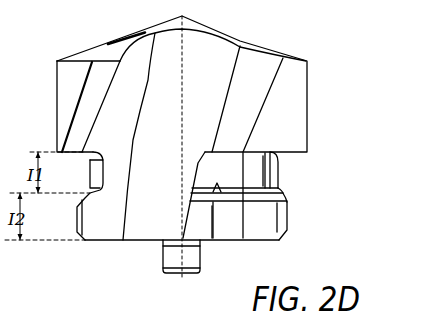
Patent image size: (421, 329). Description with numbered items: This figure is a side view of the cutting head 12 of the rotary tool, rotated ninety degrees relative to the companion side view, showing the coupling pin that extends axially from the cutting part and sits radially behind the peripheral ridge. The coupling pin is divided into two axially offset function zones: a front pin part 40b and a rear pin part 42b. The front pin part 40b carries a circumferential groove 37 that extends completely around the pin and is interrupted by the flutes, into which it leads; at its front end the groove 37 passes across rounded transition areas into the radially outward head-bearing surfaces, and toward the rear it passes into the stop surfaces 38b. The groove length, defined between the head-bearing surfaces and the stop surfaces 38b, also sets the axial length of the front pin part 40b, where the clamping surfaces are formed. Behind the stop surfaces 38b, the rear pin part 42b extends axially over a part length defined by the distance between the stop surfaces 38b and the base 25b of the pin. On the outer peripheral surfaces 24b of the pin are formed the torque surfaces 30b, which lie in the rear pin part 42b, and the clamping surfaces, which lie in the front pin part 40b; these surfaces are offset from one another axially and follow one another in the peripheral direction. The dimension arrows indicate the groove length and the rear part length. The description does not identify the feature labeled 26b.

The cutting head 12 is at (328, 41).
The outer peripheral surfaces 24b is at (252, 212).
The base 25b is at (122, 240).
The locating projection 26b is at (172, 258).
The torque surfaces 30b is at (230, 215).
The circumferential groove 37 is at (284, 187).
The front pin part 40b is at (278, 172).
The rear pin part 42b is at (288, 217).
The stop surfaces 38b is at (212, 238).